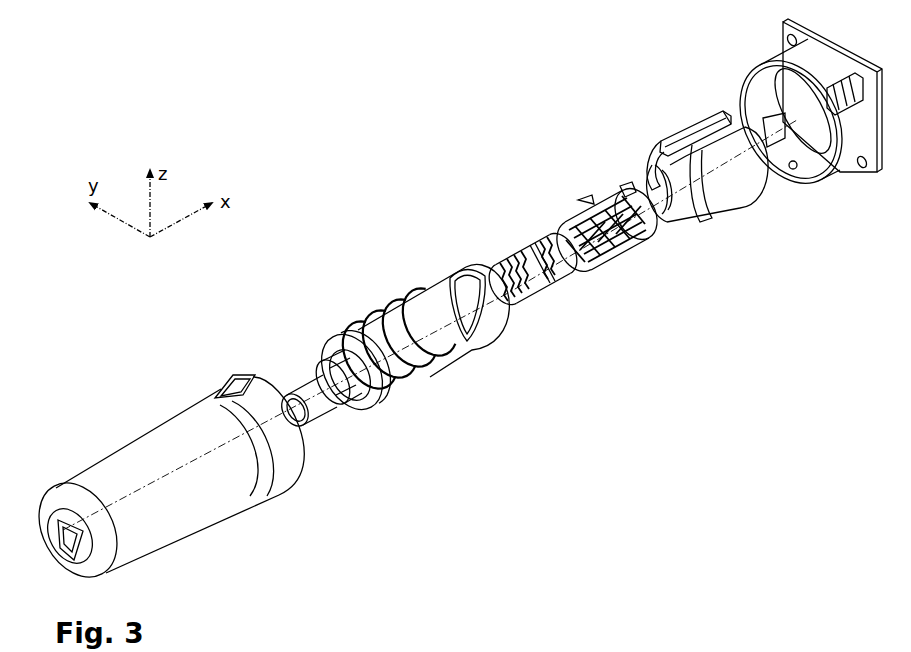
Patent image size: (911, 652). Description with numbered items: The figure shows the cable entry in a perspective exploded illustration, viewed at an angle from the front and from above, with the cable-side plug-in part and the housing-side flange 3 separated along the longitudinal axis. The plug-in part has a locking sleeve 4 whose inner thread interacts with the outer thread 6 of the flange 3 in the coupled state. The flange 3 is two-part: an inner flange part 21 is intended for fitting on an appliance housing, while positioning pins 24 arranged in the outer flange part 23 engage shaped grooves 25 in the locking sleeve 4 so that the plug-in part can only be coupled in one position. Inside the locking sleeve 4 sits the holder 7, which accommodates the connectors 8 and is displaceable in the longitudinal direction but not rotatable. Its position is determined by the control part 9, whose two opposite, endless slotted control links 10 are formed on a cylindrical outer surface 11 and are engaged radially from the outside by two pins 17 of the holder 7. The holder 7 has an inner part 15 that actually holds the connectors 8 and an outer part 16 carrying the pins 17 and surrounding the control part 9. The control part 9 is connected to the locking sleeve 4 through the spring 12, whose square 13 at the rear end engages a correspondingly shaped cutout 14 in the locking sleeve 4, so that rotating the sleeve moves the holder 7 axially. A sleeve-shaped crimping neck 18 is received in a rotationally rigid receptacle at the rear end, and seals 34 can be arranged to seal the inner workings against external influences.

The housing-side flange 3 is at (744, 179).
The locking sleeve 4 is at (163, 464).
The outer thread 6 is at (836, 152).
The holder 7 is at (646, 137).
The connectors 8 is at (543, 302).
The control part 9 is at (447, 266).
The slotted control links 10 is at (447, 332).
The cylindrical outer surface 11 is at (368, 290).
The spring 12 is at (362, 304).
The square 13 is at (299, 338).
The cutout 14 is at (56, 467).
The inner part 15 is at (613, 322).
The outer part 16 is at (707, 257).
The pins 17 is at (628, 239).
The crimping neck 18 is at (320, 490).
The inner flange part 21 is at (721, 94).
The outer flange part 23 is at (782, 114).
The positioning pins 24 is at (795, 250).
The grooves 25 is at (208, 469).
The seals 34 is at (361, 465).